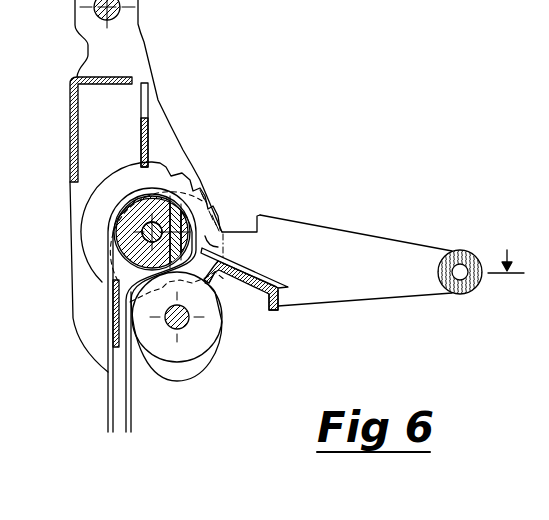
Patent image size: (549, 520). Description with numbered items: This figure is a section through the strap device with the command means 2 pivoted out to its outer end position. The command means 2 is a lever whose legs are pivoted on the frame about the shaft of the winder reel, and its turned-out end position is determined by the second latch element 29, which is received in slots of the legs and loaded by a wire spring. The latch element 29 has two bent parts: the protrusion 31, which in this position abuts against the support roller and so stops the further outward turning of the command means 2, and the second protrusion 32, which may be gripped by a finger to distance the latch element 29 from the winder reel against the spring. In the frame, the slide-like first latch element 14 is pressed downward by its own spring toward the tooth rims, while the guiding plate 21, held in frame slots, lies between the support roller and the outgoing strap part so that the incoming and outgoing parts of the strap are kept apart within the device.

The command means 2 is at (340, 238).
The latch element 14 is at (141, 138).
The guiding plate 21 is at (115, 327).
The second latch element 29 is at (246, 266).
The protrusion 31 is at (222, 282).
The second protrusion 32 is at (280, 297).